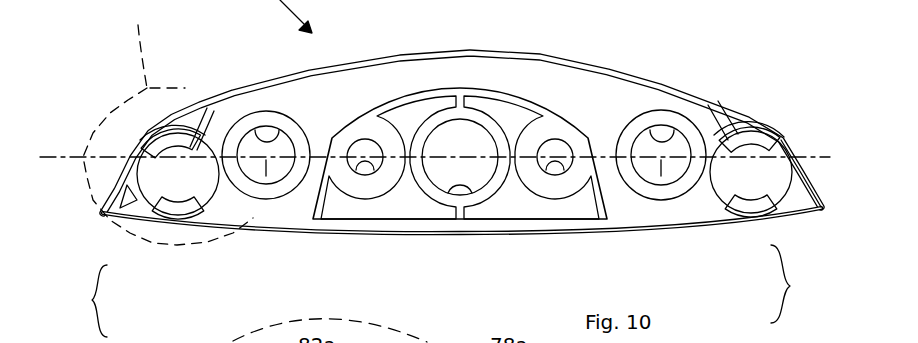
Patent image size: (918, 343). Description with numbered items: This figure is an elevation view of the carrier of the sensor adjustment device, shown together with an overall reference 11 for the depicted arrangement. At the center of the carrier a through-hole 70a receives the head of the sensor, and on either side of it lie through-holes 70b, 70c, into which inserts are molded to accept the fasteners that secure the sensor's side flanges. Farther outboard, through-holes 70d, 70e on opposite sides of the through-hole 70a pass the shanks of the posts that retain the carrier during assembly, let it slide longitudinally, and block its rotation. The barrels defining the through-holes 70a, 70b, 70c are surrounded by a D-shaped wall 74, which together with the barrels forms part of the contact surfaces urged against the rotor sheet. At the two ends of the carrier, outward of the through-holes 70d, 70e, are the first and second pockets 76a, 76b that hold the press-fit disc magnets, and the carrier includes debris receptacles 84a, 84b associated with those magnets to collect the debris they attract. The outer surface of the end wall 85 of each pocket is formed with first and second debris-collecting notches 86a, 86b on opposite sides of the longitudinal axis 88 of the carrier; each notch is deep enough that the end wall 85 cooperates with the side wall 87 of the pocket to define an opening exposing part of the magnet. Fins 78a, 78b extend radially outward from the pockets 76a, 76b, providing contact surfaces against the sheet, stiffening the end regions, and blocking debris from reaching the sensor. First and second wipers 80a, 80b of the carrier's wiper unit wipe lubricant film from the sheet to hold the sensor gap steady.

The hinge assembly 11 is at (127, 22).
The D-shaped wall 74 is at (443, 88).
The through-hole 70a is at (477, 192).
The through-hole 70b is at (366, 170).
The through-hole 70c is at (560, 170).
The through-hole 70d is at (267, 133).
The through-hole 70e is at (670, 132).
The first pocket 76a is at (225, 212).
The second pocket 76b is at (718, 197).
The fin 78a is at (197, 118).
The fin 78b is at (733, 100).
The first wiper 80a is at (90, 183).
The second wiper 80b is at (808, 180).
The debris receptacle 84a is at (135, 235).
The debris receptacle 84b is at (770, 227).
The end wall 85 is at (185, 192).
The first debris-collecting notch 86a is at (142, 205).
The second debris-collecting notch 86b is at (180, 213).
The side wall 87 is at (178, 128).
The longitudinal axis 88 is at (67, 155).